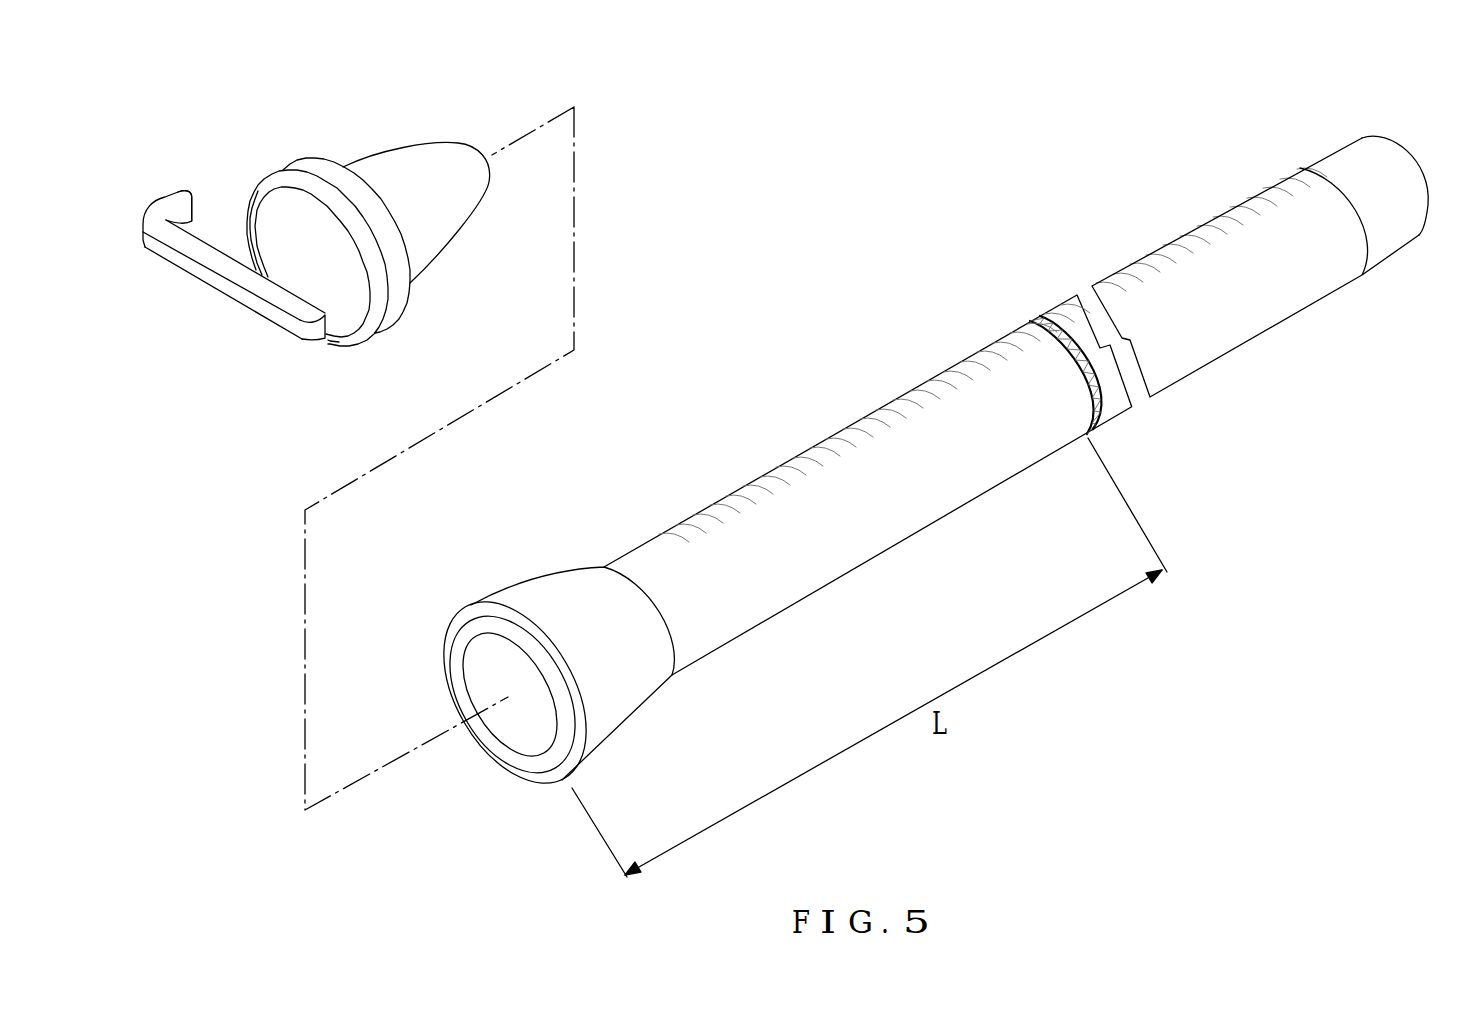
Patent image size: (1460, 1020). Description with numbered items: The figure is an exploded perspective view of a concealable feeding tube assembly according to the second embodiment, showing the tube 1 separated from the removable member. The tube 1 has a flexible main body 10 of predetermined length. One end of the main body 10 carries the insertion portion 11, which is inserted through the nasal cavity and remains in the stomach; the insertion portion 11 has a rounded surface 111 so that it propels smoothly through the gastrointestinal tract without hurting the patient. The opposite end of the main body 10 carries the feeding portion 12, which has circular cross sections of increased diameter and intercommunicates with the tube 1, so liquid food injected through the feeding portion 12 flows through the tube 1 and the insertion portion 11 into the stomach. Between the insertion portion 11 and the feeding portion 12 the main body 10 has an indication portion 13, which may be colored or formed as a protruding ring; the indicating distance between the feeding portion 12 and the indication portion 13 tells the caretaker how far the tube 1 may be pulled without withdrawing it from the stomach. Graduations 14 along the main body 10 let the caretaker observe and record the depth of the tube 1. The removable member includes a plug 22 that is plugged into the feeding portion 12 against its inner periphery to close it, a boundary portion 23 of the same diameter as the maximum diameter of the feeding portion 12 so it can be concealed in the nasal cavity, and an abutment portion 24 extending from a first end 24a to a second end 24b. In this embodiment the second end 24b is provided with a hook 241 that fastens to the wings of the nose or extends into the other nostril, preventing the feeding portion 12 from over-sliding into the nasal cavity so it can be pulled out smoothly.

The tube 1 is at (915, 586).
The main body 10 is at (935, 483).
The insertion portion 11 is at (1389, 234).
The rounded surface 111 is at (1414, 170).
The feeding portion 12 is at (613, 705).
The indication portion 13 is at (1109, 423).
The graduations 14 is at (937, 378).
The plug 22 is at (445, 158).
The boundary portion 23 is at (290, 205).
The abutment portion 24 is at (230, 288).
The first end of the abutment portion 24a is at (322, 323).
The second end of the abutment portion 24b is at (195, 193).
The hook 241 is at (170, 204).